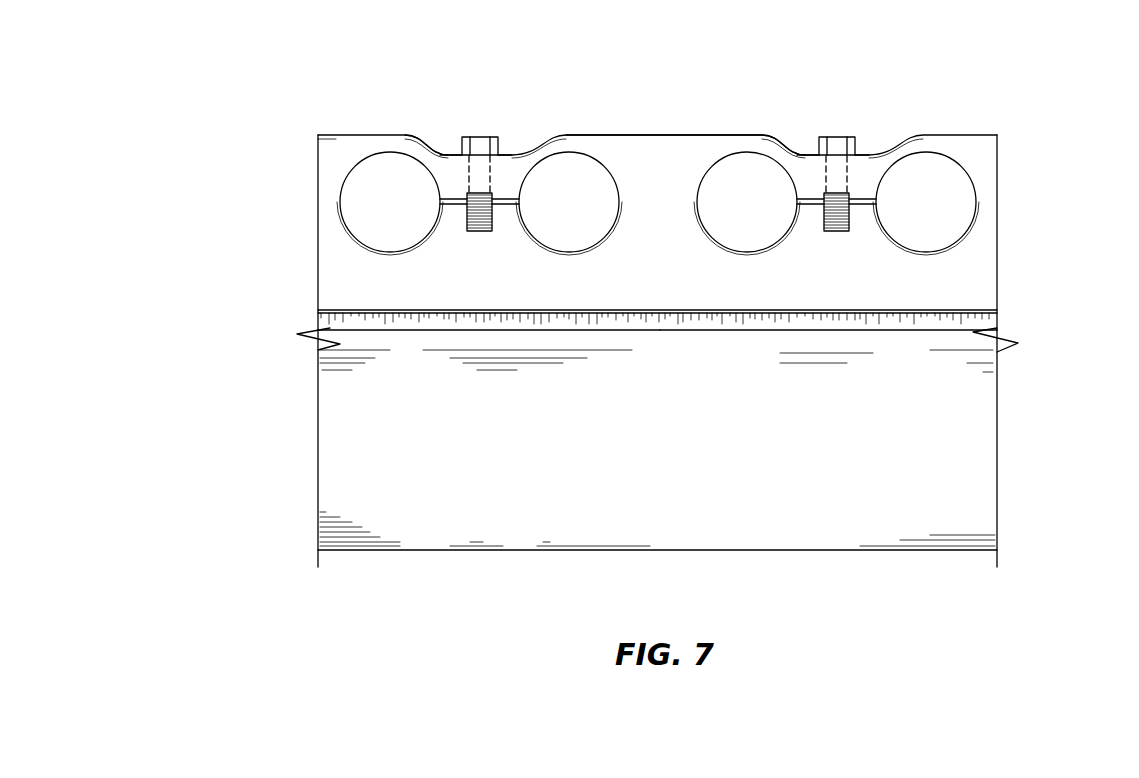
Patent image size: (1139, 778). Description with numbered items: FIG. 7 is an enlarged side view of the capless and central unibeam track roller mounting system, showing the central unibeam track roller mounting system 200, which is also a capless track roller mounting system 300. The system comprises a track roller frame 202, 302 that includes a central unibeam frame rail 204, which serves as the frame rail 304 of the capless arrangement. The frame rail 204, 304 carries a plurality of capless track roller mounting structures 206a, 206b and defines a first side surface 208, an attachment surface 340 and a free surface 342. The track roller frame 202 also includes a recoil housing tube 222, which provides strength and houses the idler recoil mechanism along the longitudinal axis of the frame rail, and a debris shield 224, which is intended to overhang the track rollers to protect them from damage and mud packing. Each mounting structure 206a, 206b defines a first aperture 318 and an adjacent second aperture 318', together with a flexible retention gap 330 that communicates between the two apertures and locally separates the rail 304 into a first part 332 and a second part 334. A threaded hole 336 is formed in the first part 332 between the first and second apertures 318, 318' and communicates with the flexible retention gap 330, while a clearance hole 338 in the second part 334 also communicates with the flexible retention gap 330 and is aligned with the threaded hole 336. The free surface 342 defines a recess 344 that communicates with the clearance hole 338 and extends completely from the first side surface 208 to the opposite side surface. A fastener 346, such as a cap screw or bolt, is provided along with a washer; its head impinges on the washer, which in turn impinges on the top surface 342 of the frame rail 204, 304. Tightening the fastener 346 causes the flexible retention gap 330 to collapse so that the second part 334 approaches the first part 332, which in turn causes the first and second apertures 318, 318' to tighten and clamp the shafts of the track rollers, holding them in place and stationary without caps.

The central unibeam track roller mounting system 200 is at (342, 91).
The capless track roller mounting system 300 is at (342, 91).
The track roller frame 202 is at (830, 560).
The track roller frame 302 is at (830, 560).
The central unibeam frame rail 204 is at (982, 253).
The frame rail 304 is at (982, 253).
The track roller mounting structure 206a is at (485, 122).
The track roller mounting structure 206b is at (842, 122).
The first side surface 208 is at (680, 240).
The recoil housing tube 222 is at (433, 320).
The debris shield 224 is at (527, 523).
The first aperture 318 is at (568, 222).
The second aperture 318' is at (747, 222).
The flexible retention gap 330 is at (500, 207).
The first part 332 is at (453, 223).
The second part 334 is at (477, 168).
The threaded hole 336 is at (477, 232).
The clearance hole 338 is at (491, 190).
The attachment surface 340 is at (927, 313).
The free surface 342 is at (663, 135).
The recess 344 is at (448, 153).
The fastener 346 is at (463, 140).